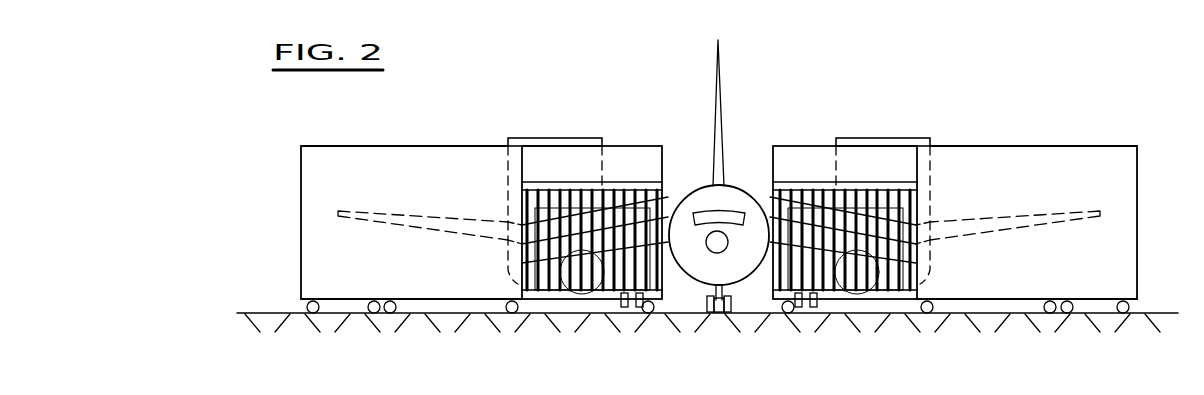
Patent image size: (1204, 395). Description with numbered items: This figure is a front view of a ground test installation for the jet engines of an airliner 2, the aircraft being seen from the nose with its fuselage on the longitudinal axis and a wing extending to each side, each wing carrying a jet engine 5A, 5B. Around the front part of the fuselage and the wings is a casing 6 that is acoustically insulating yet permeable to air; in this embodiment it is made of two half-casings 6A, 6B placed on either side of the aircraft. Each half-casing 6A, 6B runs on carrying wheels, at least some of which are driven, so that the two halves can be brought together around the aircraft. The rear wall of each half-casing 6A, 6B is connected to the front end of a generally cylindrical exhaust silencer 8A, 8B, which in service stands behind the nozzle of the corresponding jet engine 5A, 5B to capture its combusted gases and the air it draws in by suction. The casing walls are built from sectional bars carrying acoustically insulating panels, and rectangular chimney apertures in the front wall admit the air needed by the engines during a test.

The airliner 2 is at (735, 183).
The jet engine 5A is at (587, 292).
The jet engine 5B is at (835, 292).
The casing 6 is at (672, 140).
The half-casing 6A is at (455, 229).
The half-casing 6B is at (955, 231).
The exhaust silencer 8A is at (508, 207).
The exhaust silencer 8B is at (932, 210).